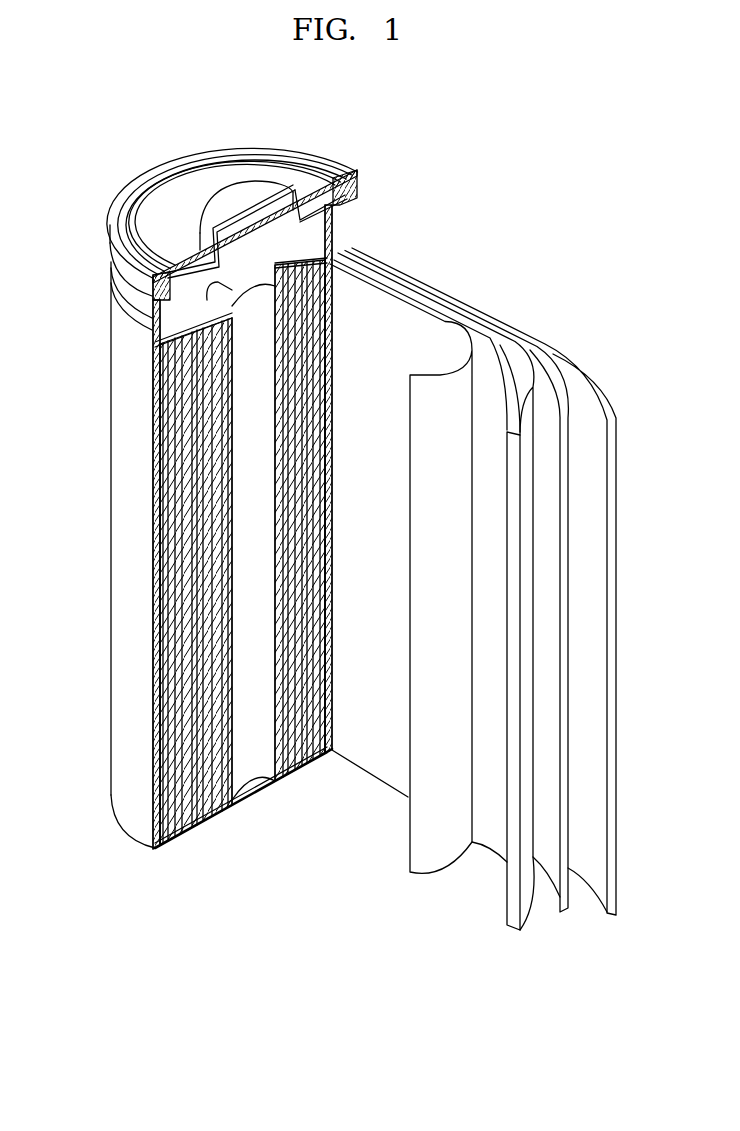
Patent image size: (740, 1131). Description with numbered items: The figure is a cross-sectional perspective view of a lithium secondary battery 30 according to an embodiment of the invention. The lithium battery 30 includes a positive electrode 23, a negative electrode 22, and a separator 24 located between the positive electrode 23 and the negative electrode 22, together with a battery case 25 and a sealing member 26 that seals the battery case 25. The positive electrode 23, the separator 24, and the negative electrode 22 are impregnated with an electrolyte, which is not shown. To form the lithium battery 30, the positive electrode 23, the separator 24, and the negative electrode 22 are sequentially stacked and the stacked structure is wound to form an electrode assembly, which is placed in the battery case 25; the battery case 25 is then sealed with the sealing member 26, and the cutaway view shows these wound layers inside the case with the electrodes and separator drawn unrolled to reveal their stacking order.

The lithium secondary battery 30 is at (311, 96).
The battery case 25 is at (113, 542).
The sealing member 26 is at (228, 193).
The negative electrode 22 is at (593, 388).
The positive electrode 23 is at (525, 383).
The separator 24 is at (447, 378).